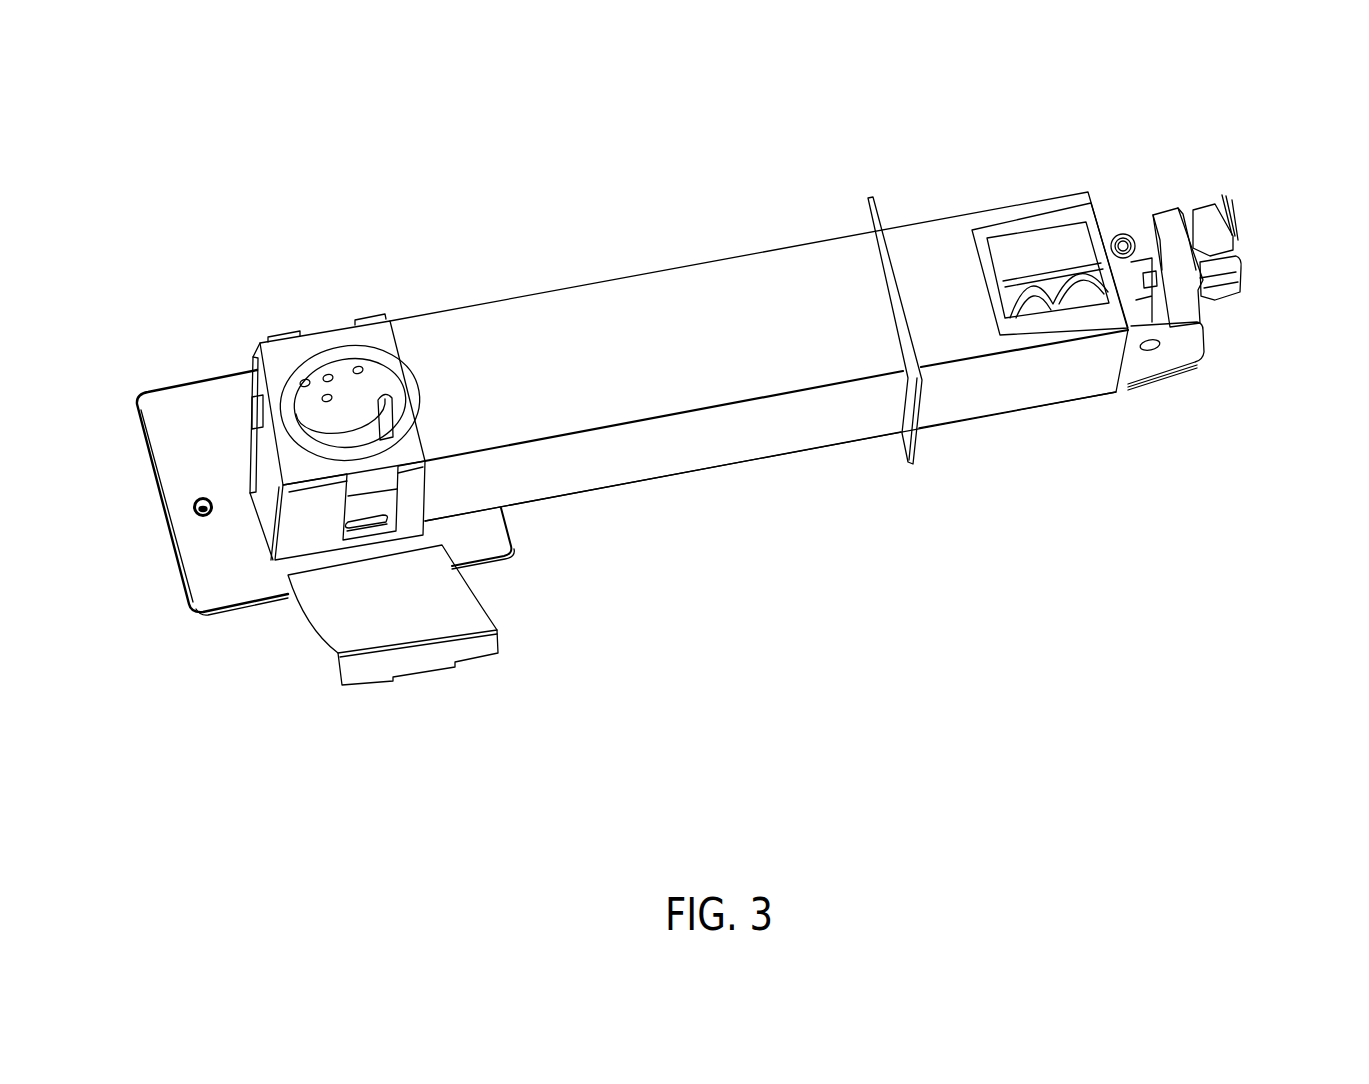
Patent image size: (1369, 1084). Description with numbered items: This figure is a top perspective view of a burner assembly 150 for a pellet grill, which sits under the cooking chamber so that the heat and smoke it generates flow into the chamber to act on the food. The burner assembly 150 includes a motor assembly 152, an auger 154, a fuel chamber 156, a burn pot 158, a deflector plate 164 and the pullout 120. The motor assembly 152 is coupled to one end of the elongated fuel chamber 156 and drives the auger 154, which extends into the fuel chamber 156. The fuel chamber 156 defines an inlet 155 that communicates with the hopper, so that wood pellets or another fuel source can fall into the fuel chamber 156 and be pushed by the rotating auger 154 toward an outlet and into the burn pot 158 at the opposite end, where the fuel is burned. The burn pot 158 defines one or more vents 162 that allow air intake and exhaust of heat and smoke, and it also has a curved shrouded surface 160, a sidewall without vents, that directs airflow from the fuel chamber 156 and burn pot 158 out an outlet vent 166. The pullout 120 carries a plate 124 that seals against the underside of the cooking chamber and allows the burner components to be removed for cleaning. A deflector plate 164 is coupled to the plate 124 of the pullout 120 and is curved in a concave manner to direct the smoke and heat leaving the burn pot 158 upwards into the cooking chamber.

The pullout 120 is at (321, 452).
The plate 124 is at (240, 576).
The burner assembly 150 is at (740, 383).
The motor assembly 152 is at (1232, 193).
The auger 154 is at (1072, 300).
The inlet 155 is at (1013, 252).
The fuel chamber 156 is at (712, 352).
The burn pot 158 is at (321, 444).
The shrouded surface 160 is at (252, 455).
The vents 162 is at (357, 368).
The deflector plate 164 is at (330, 612).
The outlet vent 166 is at (383, 526).